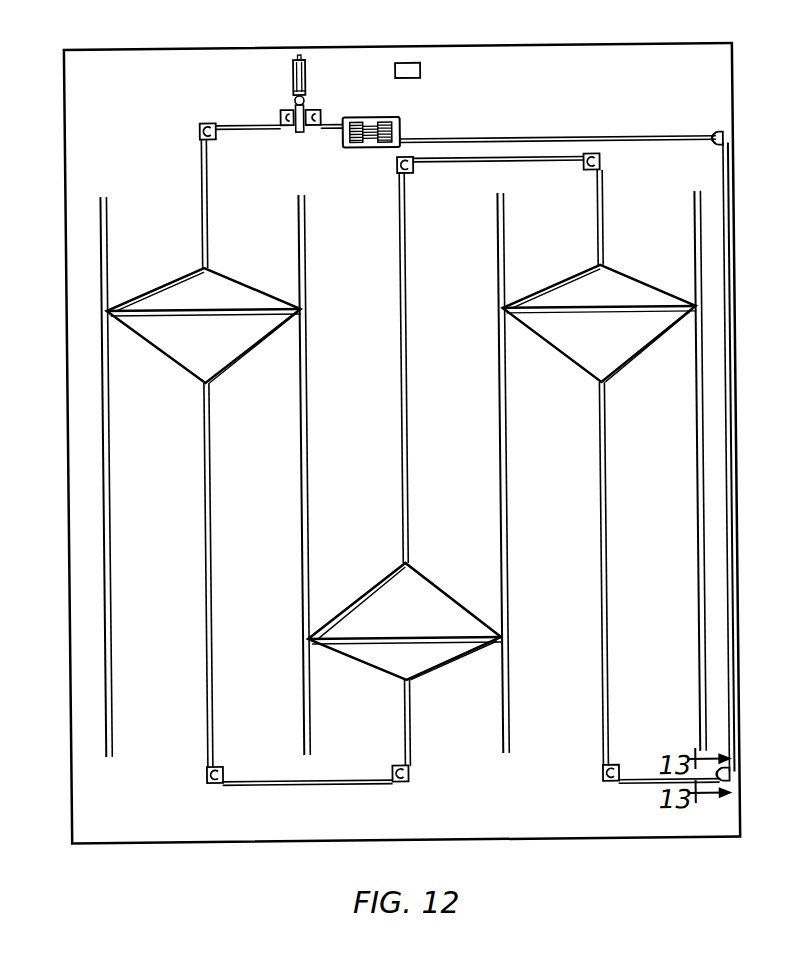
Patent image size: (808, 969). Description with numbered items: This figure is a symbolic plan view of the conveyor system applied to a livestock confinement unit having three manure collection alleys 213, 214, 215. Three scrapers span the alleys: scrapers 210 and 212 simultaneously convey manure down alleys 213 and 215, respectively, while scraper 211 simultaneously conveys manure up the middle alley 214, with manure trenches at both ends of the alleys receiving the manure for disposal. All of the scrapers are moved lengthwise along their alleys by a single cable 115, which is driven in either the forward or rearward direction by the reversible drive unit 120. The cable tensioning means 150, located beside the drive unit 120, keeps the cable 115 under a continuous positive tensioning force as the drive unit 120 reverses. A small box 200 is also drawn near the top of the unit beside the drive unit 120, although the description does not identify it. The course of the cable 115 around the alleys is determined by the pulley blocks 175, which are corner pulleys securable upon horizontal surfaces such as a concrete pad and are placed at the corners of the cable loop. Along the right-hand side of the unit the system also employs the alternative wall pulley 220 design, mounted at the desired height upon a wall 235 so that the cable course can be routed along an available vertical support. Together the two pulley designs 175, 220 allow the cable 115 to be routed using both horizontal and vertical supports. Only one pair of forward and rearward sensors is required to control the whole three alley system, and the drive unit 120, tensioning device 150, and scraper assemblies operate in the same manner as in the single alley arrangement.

The cable 115 is at (400, 262).
The reversible drive unit 120 is at (378, 117).
The cable tensioning means 150 is at (309, 75).
The pulley blocks 175 is at (206, 121).
The control unit 200 is at (424, 70).
The scraper 210 is at (639, 350).
The scraper 211 is at (441, 592).
The scraper 212 is at (241, 355).
The alley 213 is at (690, 500).
The alley 214 is at (462, 462).
The alley 215 is at (128, 463).
The wall pulley 220 is at (728, 140).
The wall 235 is at (738, 598).